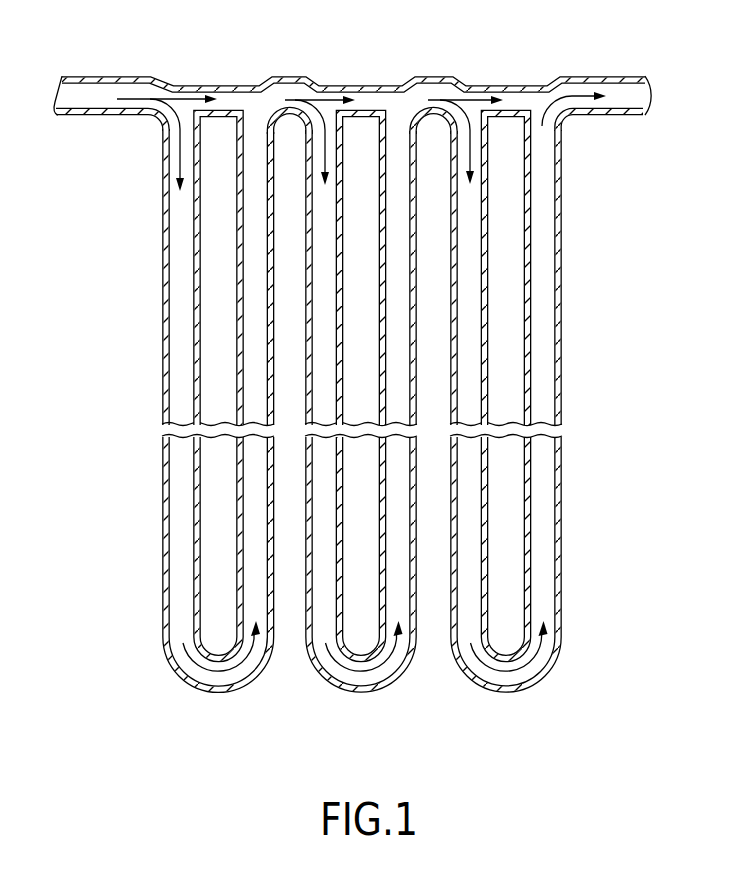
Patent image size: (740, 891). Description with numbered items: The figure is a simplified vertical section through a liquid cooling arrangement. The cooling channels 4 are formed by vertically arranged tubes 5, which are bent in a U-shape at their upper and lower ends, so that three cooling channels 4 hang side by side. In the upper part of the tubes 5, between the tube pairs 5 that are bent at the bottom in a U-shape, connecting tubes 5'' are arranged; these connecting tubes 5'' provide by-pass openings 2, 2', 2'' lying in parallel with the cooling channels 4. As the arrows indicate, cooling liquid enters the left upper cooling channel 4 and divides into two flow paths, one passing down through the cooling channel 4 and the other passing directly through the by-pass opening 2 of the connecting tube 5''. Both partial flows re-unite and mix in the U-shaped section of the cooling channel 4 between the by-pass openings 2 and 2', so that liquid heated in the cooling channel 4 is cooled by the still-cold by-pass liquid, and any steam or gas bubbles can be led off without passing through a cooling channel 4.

The by-pass opening 2 is at (195, 222).
The by-pass opening 2' is at (351, 222).
The by-pass opening 2'' is at (517, 222).
The cooling channel 4 is at (255, 323).
The tube 5 is at (366, 562).
The connecting tube 5'' is at (352, 76).